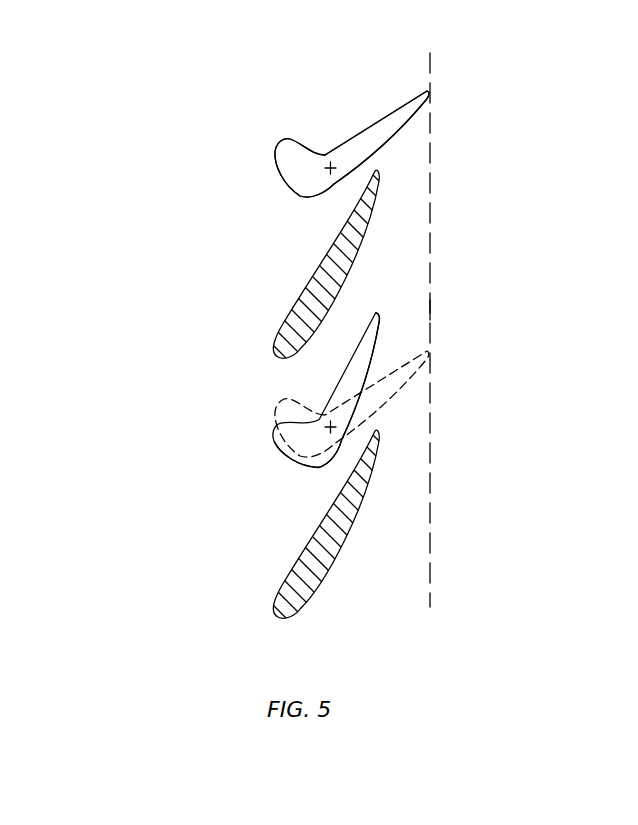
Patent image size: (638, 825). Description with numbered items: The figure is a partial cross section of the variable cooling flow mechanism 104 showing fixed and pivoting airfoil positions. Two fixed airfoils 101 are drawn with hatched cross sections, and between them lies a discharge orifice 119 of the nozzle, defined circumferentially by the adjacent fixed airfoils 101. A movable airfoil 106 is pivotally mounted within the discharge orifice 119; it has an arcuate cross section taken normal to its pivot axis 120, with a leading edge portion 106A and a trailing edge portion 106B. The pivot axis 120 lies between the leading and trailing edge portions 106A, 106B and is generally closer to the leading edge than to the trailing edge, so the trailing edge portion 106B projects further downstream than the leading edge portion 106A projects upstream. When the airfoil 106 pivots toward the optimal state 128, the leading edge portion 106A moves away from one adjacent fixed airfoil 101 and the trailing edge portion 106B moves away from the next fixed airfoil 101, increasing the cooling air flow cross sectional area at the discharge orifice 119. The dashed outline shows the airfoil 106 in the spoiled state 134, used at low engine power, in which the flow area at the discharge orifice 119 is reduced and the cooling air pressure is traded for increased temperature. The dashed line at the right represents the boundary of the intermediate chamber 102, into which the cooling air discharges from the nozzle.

The variable cooling flow mechanism 104 is at (163, 111).
The fixed airfoil 101 is at (288, 308).
The movable airfoil 106 is at (279, 187).
The leading edge portion 106A is at (275, 163).
The trailing edge portion 106B is at (402, 100).
The pivot axis 120 is at (334, 153).
The optimal state 128 is at (383, 325).
The intermediate chamber 102 is at (525, 363).
The spoiled state 134 is at (408, 380).
The discharge orifice 119 is at (338, 495).